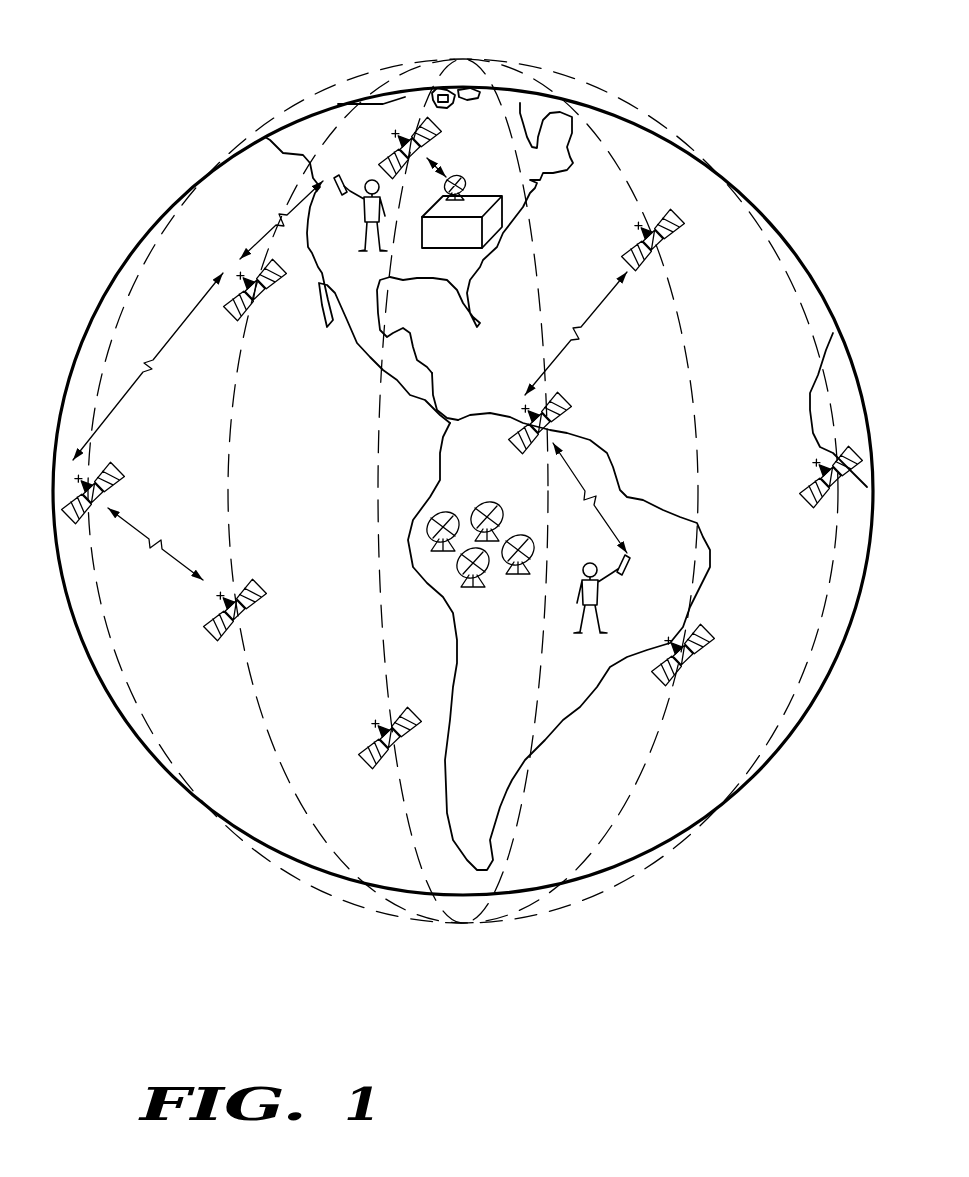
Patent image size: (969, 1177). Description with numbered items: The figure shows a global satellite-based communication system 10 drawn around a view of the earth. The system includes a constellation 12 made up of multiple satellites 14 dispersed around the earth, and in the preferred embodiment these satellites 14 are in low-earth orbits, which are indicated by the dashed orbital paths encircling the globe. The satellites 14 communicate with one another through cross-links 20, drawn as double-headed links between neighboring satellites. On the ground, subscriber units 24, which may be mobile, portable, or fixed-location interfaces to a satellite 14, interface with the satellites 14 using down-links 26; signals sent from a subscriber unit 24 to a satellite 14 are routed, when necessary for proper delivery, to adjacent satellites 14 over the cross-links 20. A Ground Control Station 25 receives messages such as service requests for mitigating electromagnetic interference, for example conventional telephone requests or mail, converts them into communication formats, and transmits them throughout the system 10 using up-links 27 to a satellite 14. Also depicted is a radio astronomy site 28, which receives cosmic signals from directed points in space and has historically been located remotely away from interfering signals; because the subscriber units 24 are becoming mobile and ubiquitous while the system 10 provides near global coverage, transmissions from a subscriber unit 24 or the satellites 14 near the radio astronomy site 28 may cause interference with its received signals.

The satellite-based communication system 10 is at (457, 1013).
The constellation 12 is at (462, 57).
The satellites 14 is at (678, 217).
The cross-links 20 is at (158, 355).
The subscriber units 24 is at (340, 180).
The Ground Control Station 25 is at (482, 197).
The down-links 26 is at (265, 238).
The up-links 27 is at (445, 155).
The radio astronomy site 28 is at (498, 592).